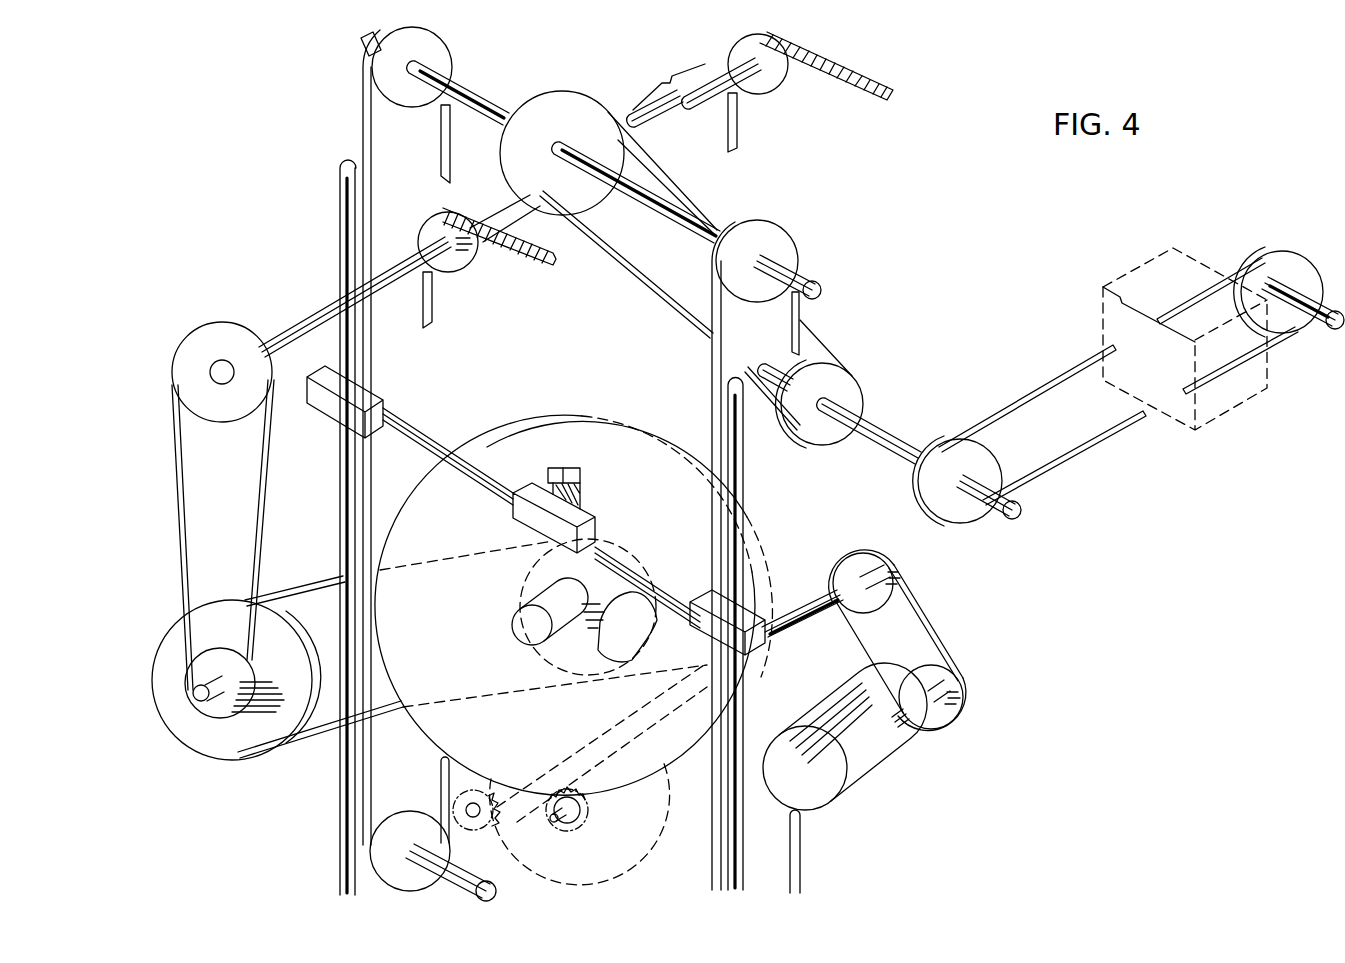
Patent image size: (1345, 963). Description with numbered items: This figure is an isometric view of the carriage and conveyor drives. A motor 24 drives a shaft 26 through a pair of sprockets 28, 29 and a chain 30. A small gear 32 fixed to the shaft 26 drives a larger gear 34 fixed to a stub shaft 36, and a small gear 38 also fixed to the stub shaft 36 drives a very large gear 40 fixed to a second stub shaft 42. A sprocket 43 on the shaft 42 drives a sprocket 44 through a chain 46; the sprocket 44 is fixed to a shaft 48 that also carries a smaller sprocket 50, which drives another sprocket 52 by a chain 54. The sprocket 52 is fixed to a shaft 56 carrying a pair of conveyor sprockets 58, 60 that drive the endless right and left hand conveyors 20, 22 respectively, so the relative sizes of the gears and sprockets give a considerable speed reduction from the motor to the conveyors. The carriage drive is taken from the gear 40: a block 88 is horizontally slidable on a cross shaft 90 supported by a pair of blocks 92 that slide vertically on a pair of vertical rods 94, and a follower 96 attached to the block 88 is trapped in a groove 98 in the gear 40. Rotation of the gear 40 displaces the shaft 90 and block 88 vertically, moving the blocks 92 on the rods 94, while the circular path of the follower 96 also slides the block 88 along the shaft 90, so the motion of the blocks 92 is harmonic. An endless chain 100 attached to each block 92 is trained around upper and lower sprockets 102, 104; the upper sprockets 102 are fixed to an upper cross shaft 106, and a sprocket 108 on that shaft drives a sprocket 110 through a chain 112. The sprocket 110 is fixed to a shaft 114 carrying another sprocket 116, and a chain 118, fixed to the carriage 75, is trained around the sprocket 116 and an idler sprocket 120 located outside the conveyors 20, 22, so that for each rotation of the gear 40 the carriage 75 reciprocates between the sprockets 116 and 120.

The right hand conveyor 20 is at (520, 250).
The left hand conveyor 22 is at (856, 78).
The motor 24 is at (880, 790).
The shaft 26 is at (820, 623).
The sprocket 28 is at (945, 710).
The sprocket 29 is at (845, 580).
The chain 30 is at (938, 645).
The small gear 32 is at (478, 826).
The larger gear 34 is at (605, 862).
The stub shaft 36 is at (558, 813).
The small gear 38 is at (577, 818).
The very large gear 40 is at (543, 441).
The second stub shaft 42 is at (523, 630).
The sprocket 43 is at (622, 622).
The sprocket 44 is at (220, 733).
The chain 46 is at (310, 731).
The shaft 48 is at (200, 698).
The smaller sprocket 50 is at (203, 672).
The sprocket 52 is at (192, 368).
The chain 54 is at (184, 504).
The shaft 56 is at (292, 325).
The conveyor sprocket 58 is at (457, 264).
The conveyor sprocket 60 is at (765, 80).
The carriage 75 is at (1128, 263).
The block 88 is at (580, 513).
The cross shaft 90 is at (673, 574).
The blocks 92 is at (342, 409).
The vertical rods 94 is at (340, 193).
The follower 96 is at (577, 507).
The groove 98 is at (575, 478).
The endless chain 100 is at (364, 108).
The upper sprockets 102 is at (430, 46).
The lower sprockets 104 is at (410, 826).
The upper cross shaft 106 is at (481, 86).
The sprocket 108 is at (584, 117).
The sprocket 110 is at (848, 390).
The chain 112 is at (812, 340).
The shaft 114 is at (905, 448).
The sprocket 116 is at (966, 505).
The chain 118 is at (1093, 442).
The idler sprocket 120 is at (1302, 272).